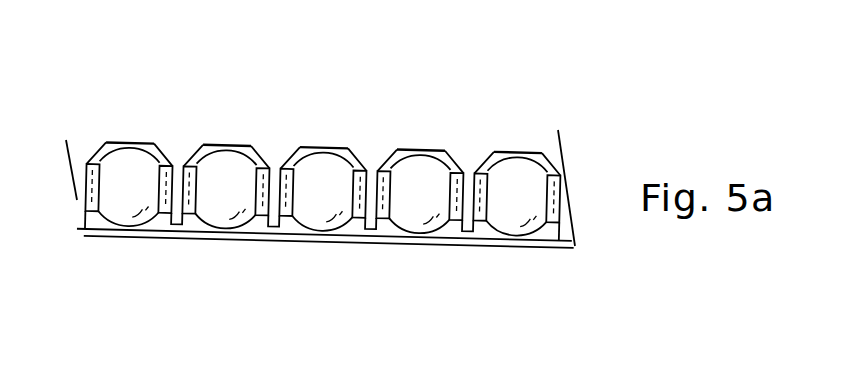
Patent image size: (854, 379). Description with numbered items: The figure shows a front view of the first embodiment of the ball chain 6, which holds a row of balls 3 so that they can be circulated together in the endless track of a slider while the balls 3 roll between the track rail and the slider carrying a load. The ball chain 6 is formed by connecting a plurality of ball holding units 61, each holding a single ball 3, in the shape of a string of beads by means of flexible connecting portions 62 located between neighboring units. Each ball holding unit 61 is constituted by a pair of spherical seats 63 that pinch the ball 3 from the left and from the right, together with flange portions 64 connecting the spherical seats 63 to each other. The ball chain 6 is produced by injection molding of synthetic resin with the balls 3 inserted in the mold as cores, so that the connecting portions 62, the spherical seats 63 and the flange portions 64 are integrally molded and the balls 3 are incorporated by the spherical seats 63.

The ball 3 is at (117, 212).
The ball chain 6 is at (478, 110).
The ball holding unit 61 is at (431, 143).
The connecting portion 62 is at (176, 226).
The spherical seat 63 is at (291, 218).
The flange portion 64 is at (220, 146).